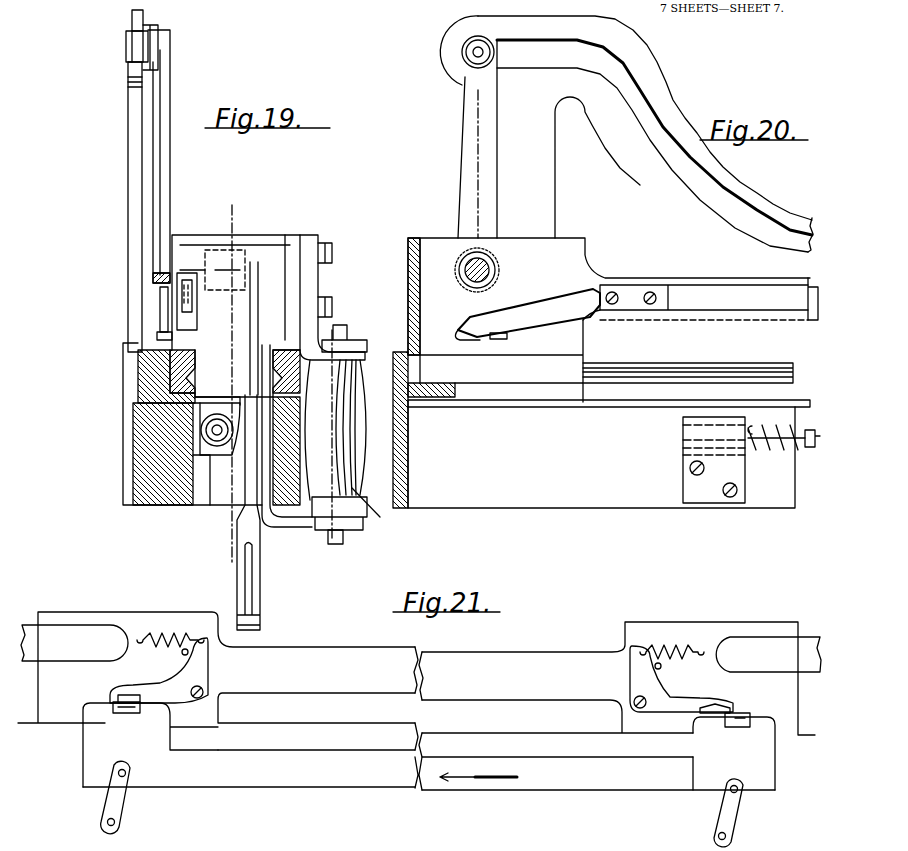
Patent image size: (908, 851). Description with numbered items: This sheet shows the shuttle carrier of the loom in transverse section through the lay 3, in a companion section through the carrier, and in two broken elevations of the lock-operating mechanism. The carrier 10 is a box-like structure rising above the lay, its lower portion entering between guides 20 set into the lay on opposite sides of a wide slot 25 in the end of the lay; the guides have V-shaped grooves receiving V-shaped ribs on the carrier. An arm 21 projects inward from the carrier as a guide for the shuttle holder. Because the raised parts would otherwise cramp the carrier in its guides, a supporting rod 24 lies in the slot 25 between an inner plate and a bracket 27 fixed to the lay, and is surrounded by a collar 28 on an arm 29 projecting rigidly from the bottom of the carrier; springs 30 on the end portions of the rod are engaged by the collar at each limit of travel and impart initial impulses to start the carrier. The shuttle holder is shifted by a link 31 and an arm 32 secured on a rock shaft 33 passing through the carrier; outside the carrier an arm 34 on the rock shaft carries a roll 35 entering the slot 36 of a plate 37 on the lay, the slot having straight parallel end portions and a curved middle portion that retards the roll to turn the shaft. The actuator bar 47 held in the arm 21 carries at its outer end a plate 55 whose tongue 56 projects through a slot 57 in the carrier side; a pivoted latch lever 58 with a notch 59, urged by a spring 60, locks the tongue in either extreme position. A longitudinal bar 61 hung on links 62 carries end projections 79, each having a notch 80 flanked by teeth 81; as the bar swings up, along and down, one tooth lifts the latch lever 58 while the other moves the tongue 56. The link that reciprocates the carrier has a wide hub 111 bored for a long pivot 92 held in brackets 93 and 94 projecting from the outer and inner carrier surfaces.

In FIG. 19, the lay 3 is at (133, 486).
In FIG. 19, the shuttle carrier 10 is at (225, 340).
In FIG. 20, the shuttle carrier 10 is at (540, 273).
In FIG. 21, the shuttle carrier 10 is at (58, 618).
In FIG. 19, the guides 20 is at (305, 360).
In FIG. 20, the guides 20 is at (672, 370).
In FIG. 19, the arm 21 is at (185, 262).
In FIG. 20, the arm 21 is at (803, 318).
In FIG. 21, the arm 21 is at (455, 718).
In FIG. 19, the supporting rod 24 is at (232, 372).
In FIG. 20, the supporting rod 24 is at (808, 450).
In FIG. 19, the slot 25 is at (225, 488).
In FIG. 20, the slot 25 is at (601, 457).
In FIG. 20, the bracket 27 is at (683, 450).
In FIG. 19, the collar 28 is at (217, 432).
In FIG. 19, the arm 29 is at (195, 400).
In FIG. 20, the arm 29 is at (620, 408).
In FIG. 20, the springs 30 is at (775, 455).
In FIG. 19, the link 31 is at (248, 585).
In FIG. 19, the arm 32 is at (260, 600).
In FIG. 20, the rock shaft 33 is at (468, 258).
In FIG. 19, the arm 34 is at (170, 170).
In FIG. 20, the arm 34 is at (462, 140).
In FIG. 21, the arm 34 is at (88, 650).
In FIG. 19, the roll 35 is at (130, 32).
In FIG. 20, the roll 35 is at (495, 52).
In FIG. 20, the slot 36 is at (630, 100).
In FIG. 19, the plate 37 is at (128, 123).
In FIG. 20, the plate 37 is at (740, 197).
In FIG. 19, the actuator bar 47 is at (158, 285).
In FIG. 20, the actuator bar 47 is at (757, 303).
In FIG. 19, the plate 55 is at (192, 300).
In FIG. 20, the plate 55 is at (575, 305).
In FIG. 19, the tongue 56 is at (160, 338).
In FIG. 20, the tongue 56 is at (462, 330).
In FIG. 21, the tongue 56 is at (128, 713).
In FIG. 20, the slot 57 is at (500, 340).
In FIG. 21, the slot 57 is at (98, 712).
In FIG. 19, the latch lever 58 is at (178, 300).
In FIG. 21, the latch lever 58 is at (200, 668).
In FIG. 21, the notch 59 is at (128, 702).
In FIG. 21, the spring 60 is at (160, 637).
In FIG. 21, the longitudinal bar 61 is at (429, 776).
In FIG. 21, the links 62 is at (118, 812).
In FIG. 21, the projections 79 is at (90, 768).
In FIG. 21, the notch 80 is at (742, 728).
In FIG. 21, the teeth 81 is at (95, 740).
In FIG. 19, the pivot 92 is at (335, 544).
In FIG. 19, the bracket 93 is at (318, 279).
In FIG. 19, the bracket 94 is at (298, 527).
In FIG. 19, the hub portion 111 is at (410, 534).